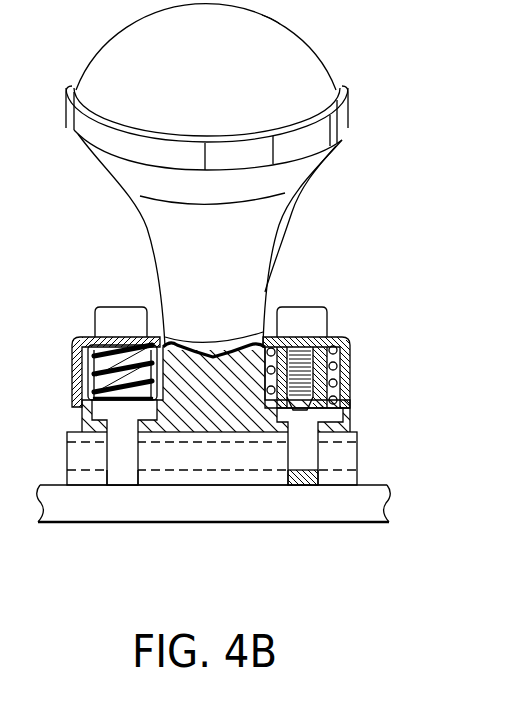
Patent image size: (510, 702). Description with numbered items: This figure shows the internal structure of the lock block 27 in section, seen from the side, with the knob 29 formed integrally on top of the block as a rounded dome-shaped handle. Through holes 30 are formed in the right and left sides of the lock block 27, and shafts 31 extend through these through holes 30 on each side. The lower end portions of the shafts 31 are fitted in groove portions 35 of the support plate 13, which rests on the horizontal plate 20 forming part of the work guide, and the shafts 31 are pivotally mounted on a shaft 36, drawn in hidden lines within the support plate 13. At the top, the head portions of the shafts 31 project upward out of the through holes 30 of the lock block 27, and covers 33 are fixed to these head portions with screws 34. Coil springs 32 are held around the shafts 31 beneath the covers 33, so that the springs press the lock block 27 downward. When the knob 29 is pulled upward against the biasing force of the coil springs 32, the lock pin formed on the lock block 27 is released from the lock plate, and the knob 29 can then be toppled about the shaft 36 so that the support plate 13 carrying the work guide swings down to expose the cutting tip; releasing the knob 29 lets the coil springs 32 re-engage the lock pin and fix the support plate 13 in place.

The support plate 13 is at (178, 478).
The horizontal plate 20 is at (268, 513).
The lock block 27 is at (198, 352).
The knob 29 is at (135, 45).
The through holes 30 is at (88, 416).
The shafts 31 is at (127, 408).
The coil springs 32 is at (72, 357).
The covers 33 is at (81, 337).
The screws 34 is at (114, 320).
The groove portions 35 is at (132, 467).
The shaft 36 is at (97, 457).